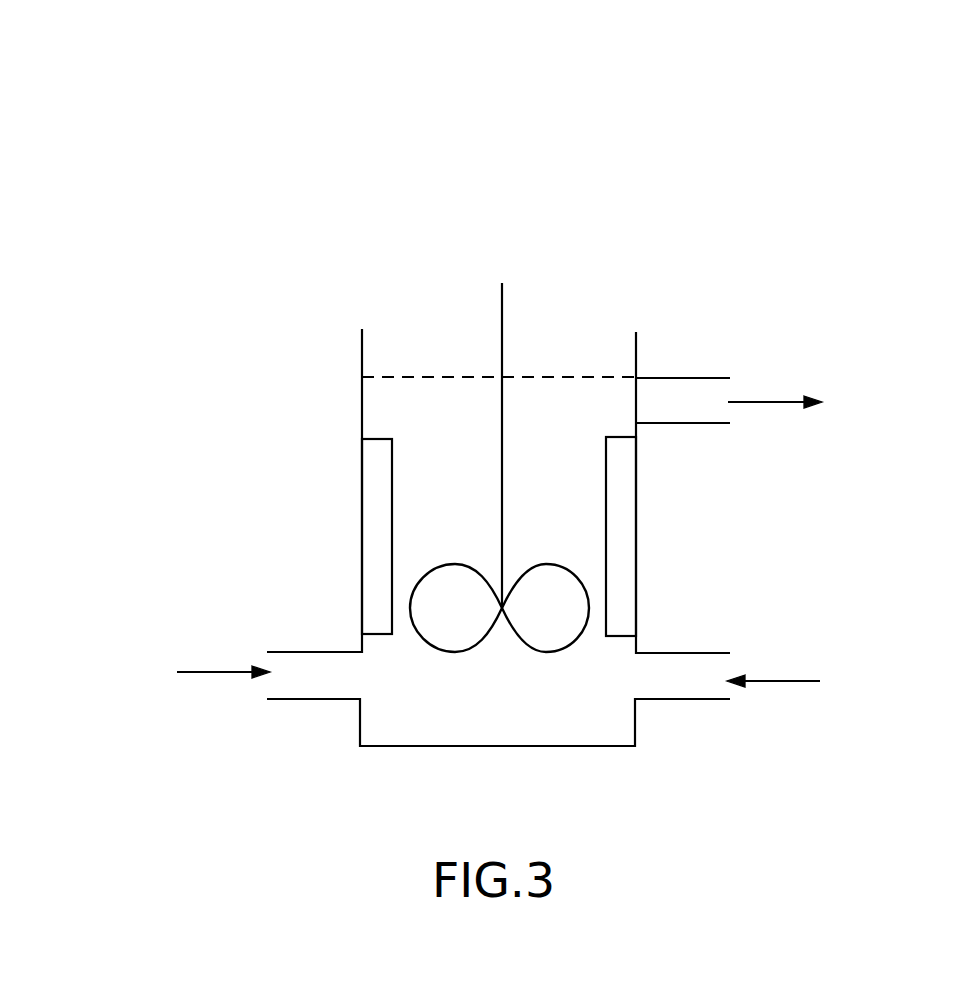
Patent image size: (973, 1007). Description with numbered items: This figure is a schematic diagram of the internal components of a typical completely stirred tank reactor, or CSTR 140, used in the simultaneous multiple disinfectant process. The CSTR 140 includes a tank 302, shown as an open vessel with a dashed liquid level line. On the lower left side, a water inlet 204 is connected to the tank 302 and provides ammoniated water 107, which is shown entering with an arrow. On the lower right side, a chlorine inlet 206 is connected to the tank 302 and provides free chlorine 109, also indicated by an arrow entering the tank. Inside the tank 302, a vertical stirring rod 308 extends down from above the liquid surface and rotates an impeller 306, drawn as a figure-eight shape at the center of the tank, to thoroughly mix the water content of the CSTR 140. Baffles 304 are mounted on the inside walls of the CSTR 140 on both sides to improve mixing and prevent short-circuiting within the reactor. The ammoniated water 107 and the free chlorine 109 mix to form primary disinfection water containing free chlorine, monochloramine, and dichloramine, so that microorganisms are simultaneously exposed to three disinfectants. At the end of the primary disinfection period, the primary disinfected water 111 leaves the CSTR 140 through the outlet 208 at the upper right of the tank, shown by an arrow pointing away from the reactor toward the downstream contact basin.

The completely stirred tank reactor (CSTR) 140 is at (503, 401).
The tank 302 is at (357, 413).
The baffles 304 is at (376, 515).
The impeller 306 is at (542, 601).
The stirring rod 308 is at (500, 313).
The water inlet 204 is at (338, 677).
The chlorine inlet 206 is at (673, 678).
The outlet 208 is at (652, 398).
The ammoniated water 107 is at (216, 672).
The free chlorine 109 is at (768, 677).
The primary disinfected water 111 is at (768, 400).